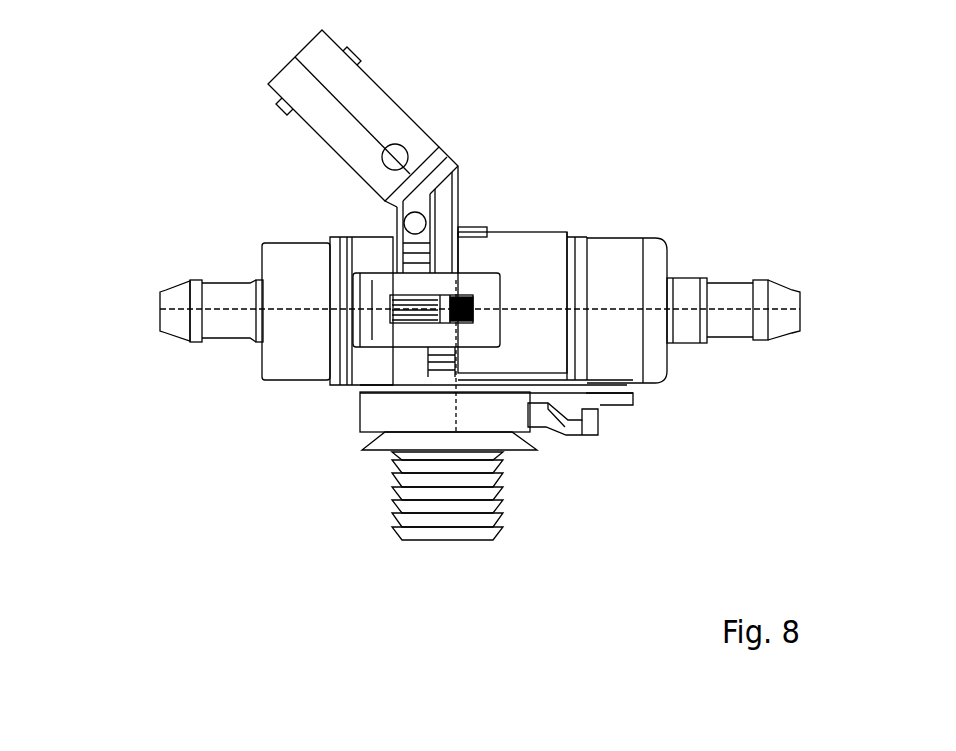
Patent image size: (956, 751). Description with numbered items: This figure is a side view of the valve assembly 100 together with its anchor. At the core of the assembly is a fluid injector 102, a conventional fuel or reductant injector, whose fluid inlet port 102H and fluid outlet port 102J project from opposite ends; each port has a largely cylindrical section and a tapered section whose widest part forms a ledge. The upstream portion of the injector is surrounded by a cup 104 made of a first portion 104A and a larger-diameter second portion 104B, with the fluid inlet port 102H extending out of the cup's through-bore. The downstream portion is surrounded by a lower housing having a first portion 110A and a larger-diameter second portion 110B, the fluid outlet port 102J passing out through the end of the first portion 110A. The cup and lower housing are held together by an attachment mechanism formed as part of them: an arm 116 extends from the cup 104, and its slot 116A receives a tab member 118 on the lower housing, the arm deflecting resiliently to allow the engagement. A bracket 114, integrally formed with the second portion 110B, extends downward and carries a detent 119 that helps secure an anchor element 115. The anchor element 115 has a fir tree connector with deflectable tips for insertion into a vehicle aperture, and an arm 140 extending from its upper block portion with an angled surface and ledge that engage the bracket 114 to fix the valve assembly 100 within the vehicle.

The valve assembly 100 is at (577, 90).
The fluid injector 102 is at (382, 91).
The fluid inlet port 102H is at (177, 282).
The fluid outlet port 102J is at (753, 271).
The cup 104 is at (283, 235).
The first portion 104A is at (289, 243).
The second portion 104B is at (369, 239).
The first portion 110A is at (632, 243).
The second portion 110B is at (555, 232).
The bracket 114 is at (357, 405).
The anchor element 115 is at (522, 503).
The arm 116 is at (475, 286).
The slot 116A is at (405, 322).
The tab member 118 is at (473, 302).
The detent 119 is at (590, 408).
The arm 140 is at (575, 436).